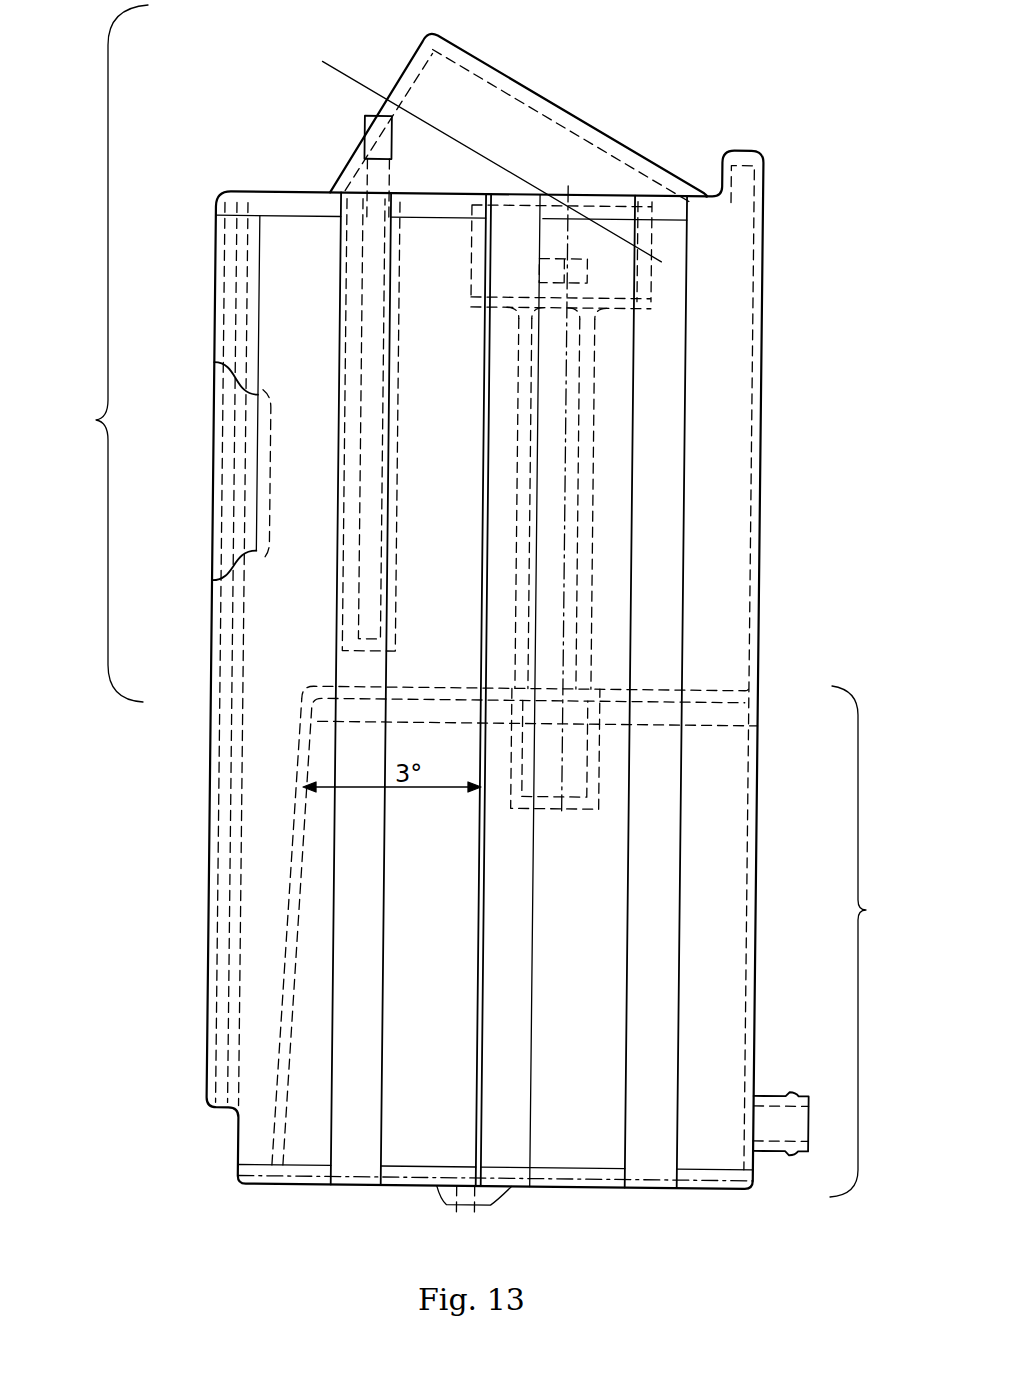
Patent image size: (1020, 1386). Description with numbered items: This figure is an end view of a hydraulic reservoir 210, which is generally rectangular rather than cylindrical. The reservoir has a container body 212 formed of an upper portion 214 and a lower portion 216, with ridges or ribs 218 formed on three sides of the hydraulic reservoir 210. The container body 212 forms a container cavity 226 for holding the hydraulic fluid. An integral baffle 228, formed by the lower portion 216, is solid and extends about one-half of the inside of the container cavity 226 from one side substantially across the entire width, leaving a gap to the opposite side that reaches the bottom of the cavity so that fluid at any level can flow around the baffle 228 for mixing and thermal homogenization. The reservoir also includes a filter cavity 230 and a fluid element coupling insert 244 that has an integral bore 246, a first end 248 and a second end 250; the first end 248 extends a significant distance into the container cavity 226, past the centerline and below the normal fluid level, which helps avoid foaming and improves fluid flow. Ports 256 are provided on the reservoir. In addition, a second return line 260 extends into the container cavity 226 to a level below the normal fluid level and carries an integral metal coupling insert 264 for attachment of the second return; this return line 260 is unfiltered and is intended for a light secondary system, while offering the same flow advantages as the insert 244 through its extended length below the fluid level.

The hydraulic reservoir 210 is at (838, 572).
The container body 212 is at (212, 877).
The upper portion 214 is at (96, 353).
The lower portion 216 is at (875, 941).
The ridges or ribs 218 is at (352, 1138).
The container cavity 226 is at (282, 630).
The integral baffle 228 is at (296, 938).
The filter cavity 230 is at (512, 220).
The fluid element coupling insert 244 is at (605, 287).
The integral bore 246 is at (566, 472).
The first end 248 is at (580, 782).
The second end 250 is at (587, 262).
The ports 256 is at (780, 1150).
The second return line 260 is at (362, 270).
The integral metal coupling insert 264 is at (355, 117).